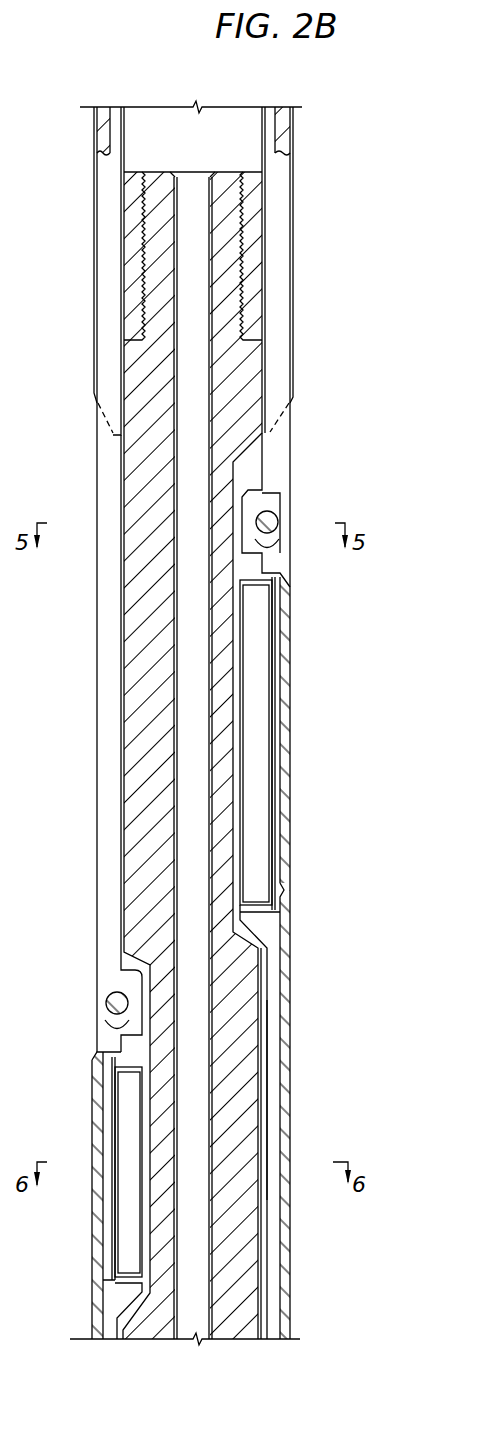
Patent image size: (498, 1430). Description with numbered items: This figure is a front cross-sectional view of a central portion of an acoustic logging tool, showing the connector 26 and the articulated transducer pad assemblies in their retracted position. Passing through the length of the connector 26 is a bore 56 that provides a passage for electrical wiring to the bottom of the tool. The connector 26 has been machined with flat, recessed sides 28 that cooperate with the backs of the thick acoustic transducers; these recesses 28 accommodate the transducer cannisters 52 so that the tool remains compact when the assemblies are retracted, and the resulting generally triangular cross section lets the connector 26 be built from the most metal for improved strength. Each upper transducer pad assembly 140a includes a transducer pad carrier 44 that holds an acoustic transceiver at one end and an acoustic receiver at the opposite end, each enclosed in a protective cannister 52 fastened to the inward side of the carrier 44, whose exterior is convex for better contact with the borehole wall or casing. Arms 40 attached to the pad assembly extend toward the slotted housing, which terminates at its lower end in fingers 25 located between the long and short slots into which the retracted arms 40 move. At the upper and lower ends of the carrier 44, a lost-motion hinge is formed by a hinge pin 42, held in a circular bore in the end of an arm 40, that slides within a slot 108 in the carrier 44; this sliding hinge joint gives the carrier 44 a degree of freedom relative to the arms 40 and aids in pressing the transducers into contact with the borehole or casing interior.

The fingers 25 is at (294, 264).
The connector 26 is at (140, 605).
The recessed sides 28 is at (233, 785).
The arms 40 is at (103, 851).
The hinge pin 42 is at (270, 512).
The transducer pad carrier 44 is at (283, 1033).
The protective cannister 52 is at (257, 685).
The bore 56 is at (173, 441).
The slot 108 is at (277, 553).
The upper transducer pad assembly 140a is at (272, 1120).